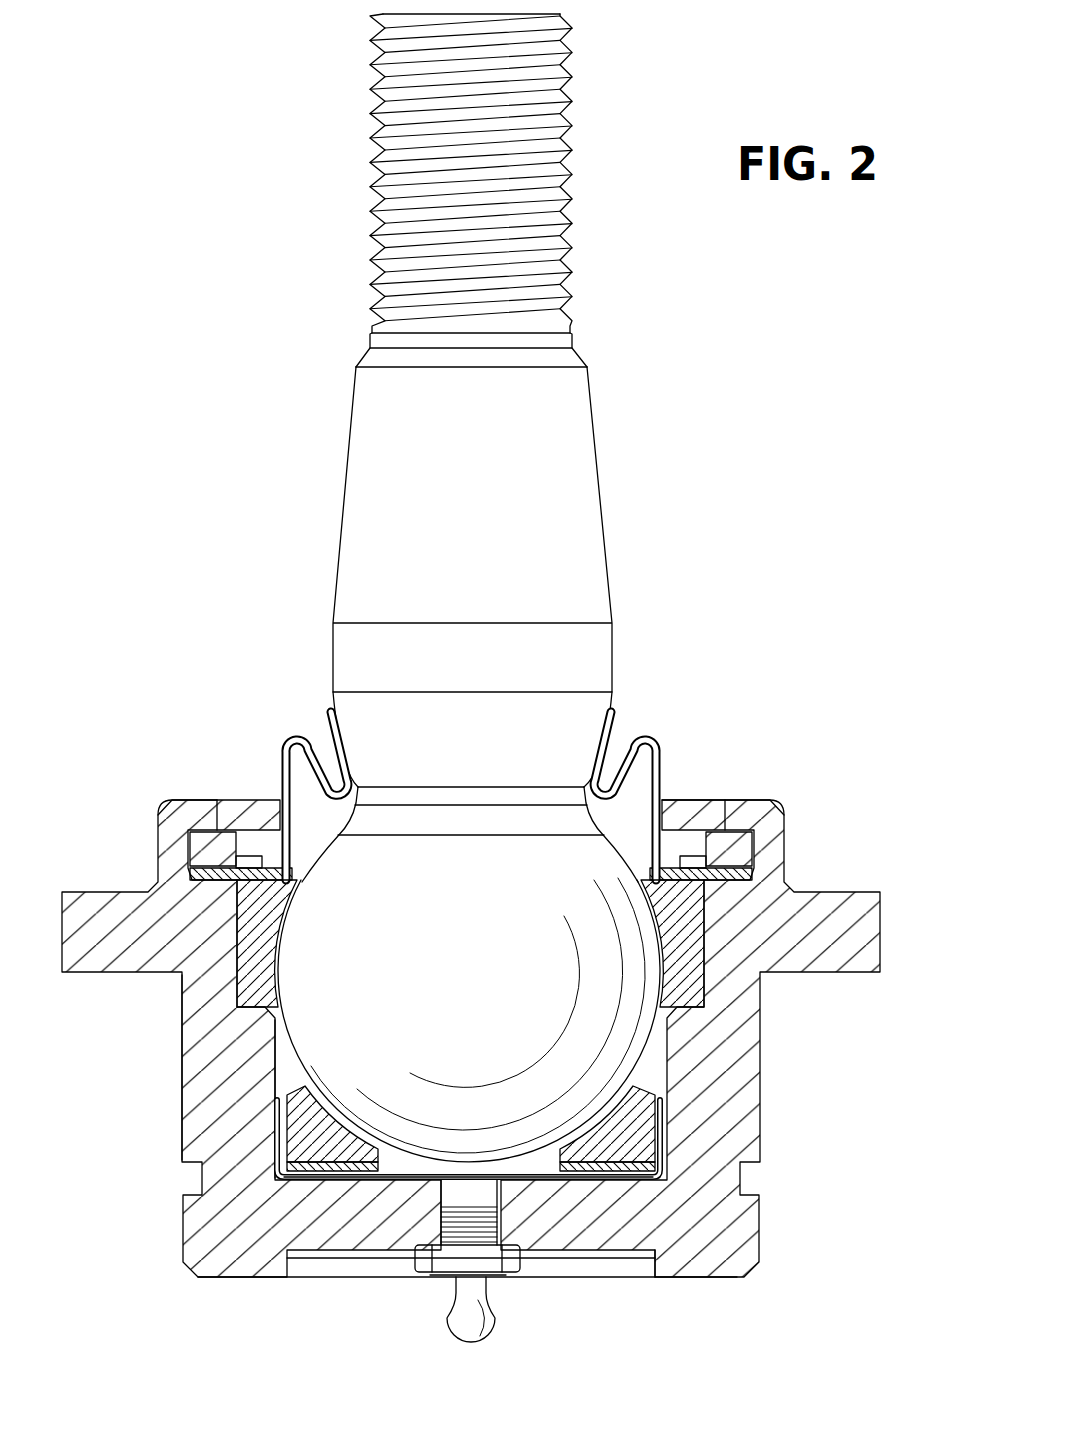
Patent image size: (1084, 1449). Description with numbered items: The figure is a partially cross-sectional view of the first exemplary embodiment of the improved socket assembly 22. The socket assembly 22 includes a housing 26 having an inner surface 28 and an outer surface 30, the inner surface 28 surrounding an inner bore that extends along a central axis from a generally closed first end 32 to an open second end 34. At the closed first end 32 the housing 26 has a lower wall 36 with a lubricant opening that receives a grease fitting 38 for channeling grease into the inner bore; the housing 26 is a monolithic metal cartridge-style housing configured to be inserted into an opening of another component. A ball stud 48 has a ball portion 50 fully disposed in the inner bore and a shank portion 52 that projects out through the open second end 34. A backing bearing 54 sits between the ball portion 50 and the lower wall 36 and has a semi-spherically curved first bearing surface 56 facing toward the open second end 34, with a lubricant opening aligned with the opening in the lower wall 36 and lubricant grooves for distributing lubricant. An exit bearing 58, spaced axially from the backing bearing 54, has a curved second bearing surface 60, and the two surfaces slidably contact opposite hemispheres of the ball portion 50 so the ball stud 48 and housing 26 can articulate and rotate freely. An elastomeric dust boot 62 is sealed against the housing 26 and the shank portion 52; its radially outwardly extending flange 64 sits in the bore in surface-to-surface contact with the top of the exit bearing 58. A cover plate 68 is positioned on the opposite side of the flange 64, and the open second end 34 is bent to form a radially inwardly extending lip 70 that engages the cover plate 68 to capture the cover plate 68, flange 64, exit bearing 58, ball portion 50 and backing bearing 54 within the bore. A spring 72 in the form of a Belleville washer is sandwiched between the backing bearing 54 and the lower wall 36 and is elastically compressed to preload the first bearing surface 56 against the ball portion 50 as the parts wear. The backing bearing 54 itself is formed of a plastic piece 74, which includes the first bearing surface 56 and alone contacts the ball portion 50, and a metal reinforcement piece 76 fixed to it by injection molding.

The socket assembly 22 is at (750, 545).
The housing 26 is at (880, 945).
The inner surface 28 is at (275, 1075).
The outer surface 30 is at (182, 1060).
The first end 32 is at (622, 1182).
The second end 34 is at (705, 797).
The lower wall 36 is at (335, 1225).
The grease fitting 38 is at (466, 1325).
The ball stud 48 is at (475, 588).
The ball portion 50 is at (469, 1020).
The shank portion 52 is at (372, 450).
The backing bearing 54 is at (272, 1144).
The first bearing surface 56 is at (320, 1110).
The exit bearing 58 is at (690, 937).
The second bearing surface 60 is at (283, 920).
The dust boot 62 is at (636, 745).
The flange 64 is at (232, 865).
The cover plate 68 is at (740, 838).
The lip 70 is at (188, 810).
The spring 72 is at (357, 1178).
The plastic piece 74 is at (650, 1100).
The reinforcement piece 76 is at (660, 1145).